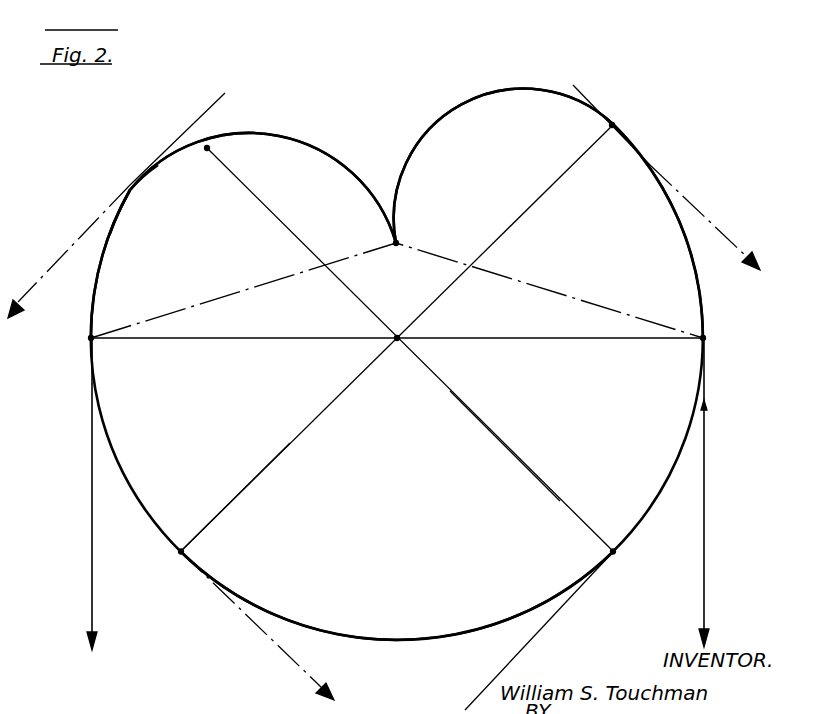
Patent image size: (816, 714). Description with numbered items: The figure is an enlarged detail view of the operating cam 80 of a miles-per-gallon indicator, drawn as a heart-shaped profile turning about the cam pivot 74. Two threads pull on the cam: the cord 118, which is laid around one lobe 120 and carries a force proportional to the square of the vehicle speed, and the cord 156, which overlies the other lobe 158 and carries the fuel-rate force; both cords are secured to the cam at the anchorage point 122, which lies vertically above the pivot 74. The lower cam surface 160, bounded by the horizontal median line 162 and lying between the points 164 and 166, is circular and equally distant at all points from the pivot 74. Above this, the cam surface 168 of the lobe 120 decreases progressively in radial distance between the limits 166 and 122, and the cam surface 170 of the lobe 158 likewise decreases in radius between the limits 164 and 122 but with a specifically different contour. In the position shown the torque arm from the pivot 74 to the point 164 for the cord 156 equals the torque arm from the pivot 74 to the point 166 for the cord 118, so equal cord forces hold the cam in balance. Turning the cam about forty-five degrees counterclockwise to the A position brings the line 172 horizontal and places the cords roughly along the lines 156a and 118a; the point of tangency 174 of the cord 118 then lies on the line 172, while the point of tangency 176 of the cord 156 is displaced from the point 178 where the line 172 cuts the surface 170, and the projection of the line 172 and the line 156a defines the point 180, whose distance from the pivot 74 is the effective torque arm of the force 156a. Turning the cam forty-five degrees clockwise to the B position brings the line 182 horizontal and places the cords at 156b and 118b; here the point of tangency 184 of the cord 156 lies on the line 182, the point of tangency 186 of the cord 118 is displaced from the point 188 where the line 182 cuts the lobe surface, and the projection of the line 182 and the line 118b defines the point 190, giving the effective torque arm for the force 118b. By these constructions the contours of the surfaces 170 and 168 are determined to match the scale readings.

The cam 80 is at (420, 76).
The cam pivot 74 is at (400, 340).
The cord 118 is at (706, 477).
The cord line in A position 118a is at (528, 632).
The cord line in B position 118b is at (718, 224).
The cam lobe 120 is at (440, 133).
The anchorage point 122 is at (397, 249).
The cord 156 is at (92, 524).
The cord line in A position 156a is at (60, 250).
The cord line in B position 156b is at (290, 660).
The cam lobe 158 is at (324, 163).
The cam surface 160 is at (345, 633).
The horizontal median line 162 is at (293, 340).
The limit point 164 is at (86, 340).
The limit point 166 is at (705, 339).
The cam surface 168 is at (689, 248).
The cam surface 170 is at (100, 267).
The line 172 is at (474, 418).
The point of tangency 174 is at (613, 553).
The point of tangency 176 is at (148, 169).
The intersection point 178 is at (209, 147).
The projection point 180 is at (186, 127).
The line 182 is at (310, 428).
The point of tangency 184 is at (181, 552).
The point of tangency 186 is at (624, 134).
The intersection point 188 is at (607, 126).
The projection point 190 is at (643, 88).
The A position A is at (512, 448).
The B position B is at (270, 463).